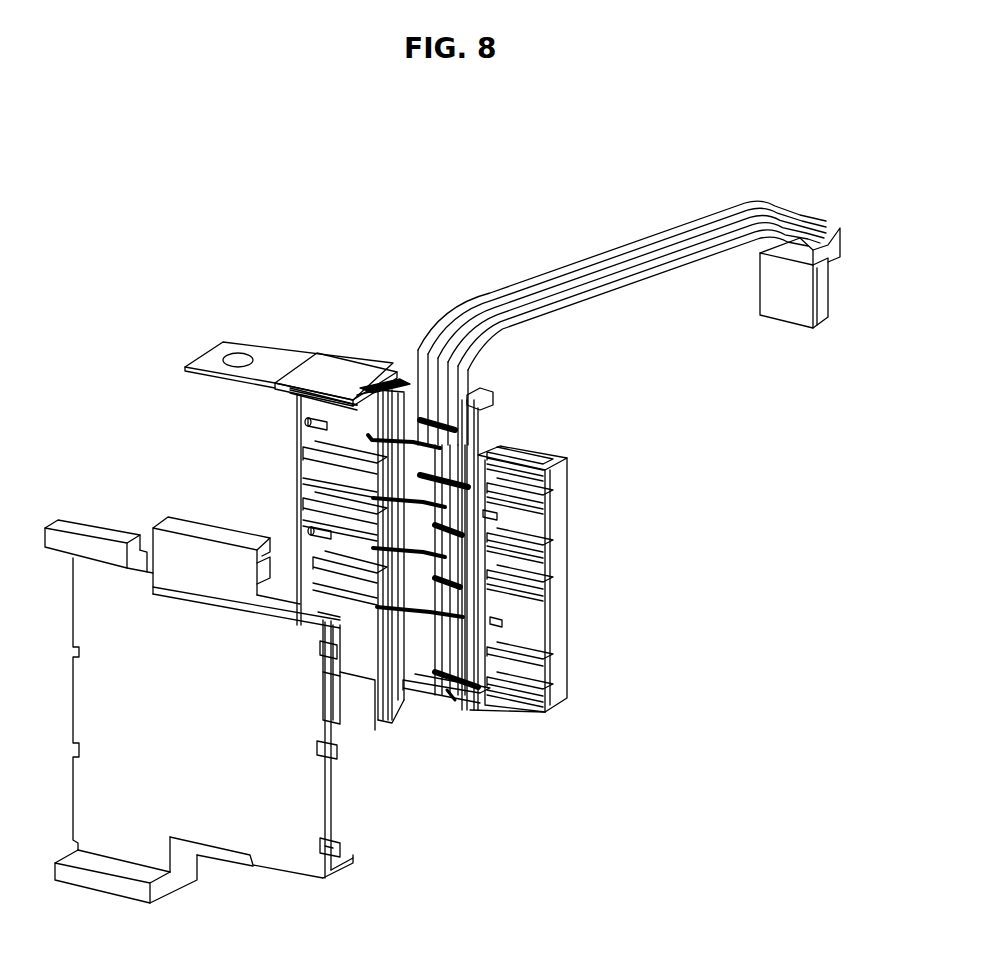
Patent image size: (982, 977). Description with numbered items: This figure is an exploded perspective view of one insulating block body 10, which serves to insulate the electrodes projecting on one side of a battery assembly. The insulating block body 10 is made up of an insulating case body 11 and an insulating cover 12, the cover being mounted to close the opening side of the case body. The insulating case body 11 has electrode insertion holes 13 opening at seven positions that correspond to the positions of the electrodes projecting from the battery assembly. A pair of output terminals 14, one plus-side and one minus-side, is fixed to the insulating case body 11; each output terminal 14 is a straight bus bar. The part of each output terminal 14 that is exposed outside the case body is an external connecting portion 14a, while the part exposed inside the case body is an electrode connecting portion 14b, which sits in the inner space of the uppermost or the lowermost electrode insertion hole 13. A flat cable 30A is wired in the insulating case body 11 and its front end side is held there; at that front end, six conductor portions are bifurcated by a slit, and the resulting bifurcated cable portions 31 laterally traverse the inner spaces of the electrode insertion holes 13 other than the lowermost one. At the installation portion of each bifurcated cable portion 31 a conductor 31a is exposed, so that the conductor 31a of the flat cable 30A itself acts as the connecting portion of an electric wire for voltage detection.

The insulating block body 10 is at (232, 262).
The insulating case body 11 is at (327, 363).
The insulating cover 12 is at (275, 847).
The electrode insertion hole 13 is at (362, 383).
The output terminal 14 is at (244, 480).
The external connecting portion 14a is at (210, 362).
The electrode connecting portion 14b is at (297, 399).
The flat cable 30A is at (538, 270).
The bifurcated cable portion 31 is at (385, 380).
The conductor 31a is at (315, 477).